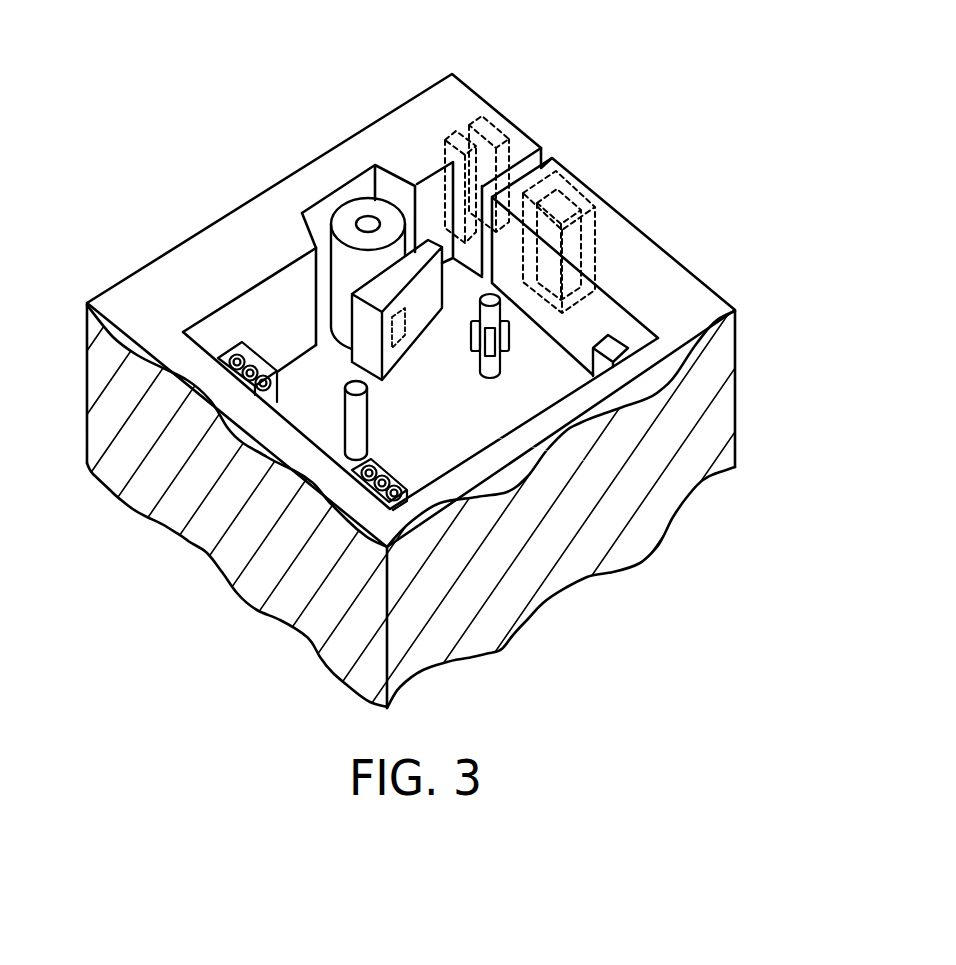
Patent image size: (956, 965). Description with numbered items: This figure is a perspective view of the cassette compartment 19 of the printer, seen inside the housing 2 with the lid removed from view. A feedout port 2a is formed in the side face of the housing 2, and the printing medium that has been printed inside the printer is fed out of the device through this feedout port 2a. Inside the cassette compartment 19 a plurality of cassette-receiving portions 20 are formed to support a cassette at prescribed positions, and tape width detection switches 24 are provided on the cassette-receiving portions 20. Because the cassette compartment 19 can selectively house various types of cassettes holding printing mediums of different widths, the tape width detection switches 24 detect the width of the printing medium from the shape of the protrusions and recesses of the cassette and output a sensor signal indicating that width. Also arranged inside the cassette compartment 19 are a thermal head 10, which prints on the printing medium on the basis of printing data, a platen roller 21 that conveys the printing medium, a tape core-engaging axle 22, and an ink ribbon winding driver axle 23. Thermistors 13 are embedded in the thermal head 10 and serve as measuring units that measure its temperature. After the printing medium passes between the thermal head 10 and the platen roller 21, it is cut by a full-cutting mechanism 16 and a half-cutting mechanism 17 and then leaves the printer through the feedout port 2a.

The housing 2 is at (132, 270).
The feedout port 2a is at (553, 150).
The thermal head 10 is at (413, 332).
The thermistors 13 is at (413, 312).
The full-cutting mechanism 16 is at (445, 122).
The half-cutting mechanism 17 is at (470, 113).
The cassette compartment 19 is at (487, 403).
The cassette-receiving portions 20 is at (257, 351).
The platen roller 21 is at (357, 213).
The tape core-engaging axle 22 is at (372, 407).
The ink ribbon winding driver axle 23 is at (507, 340).
The tape width detection switches 24 is at (283, 366).